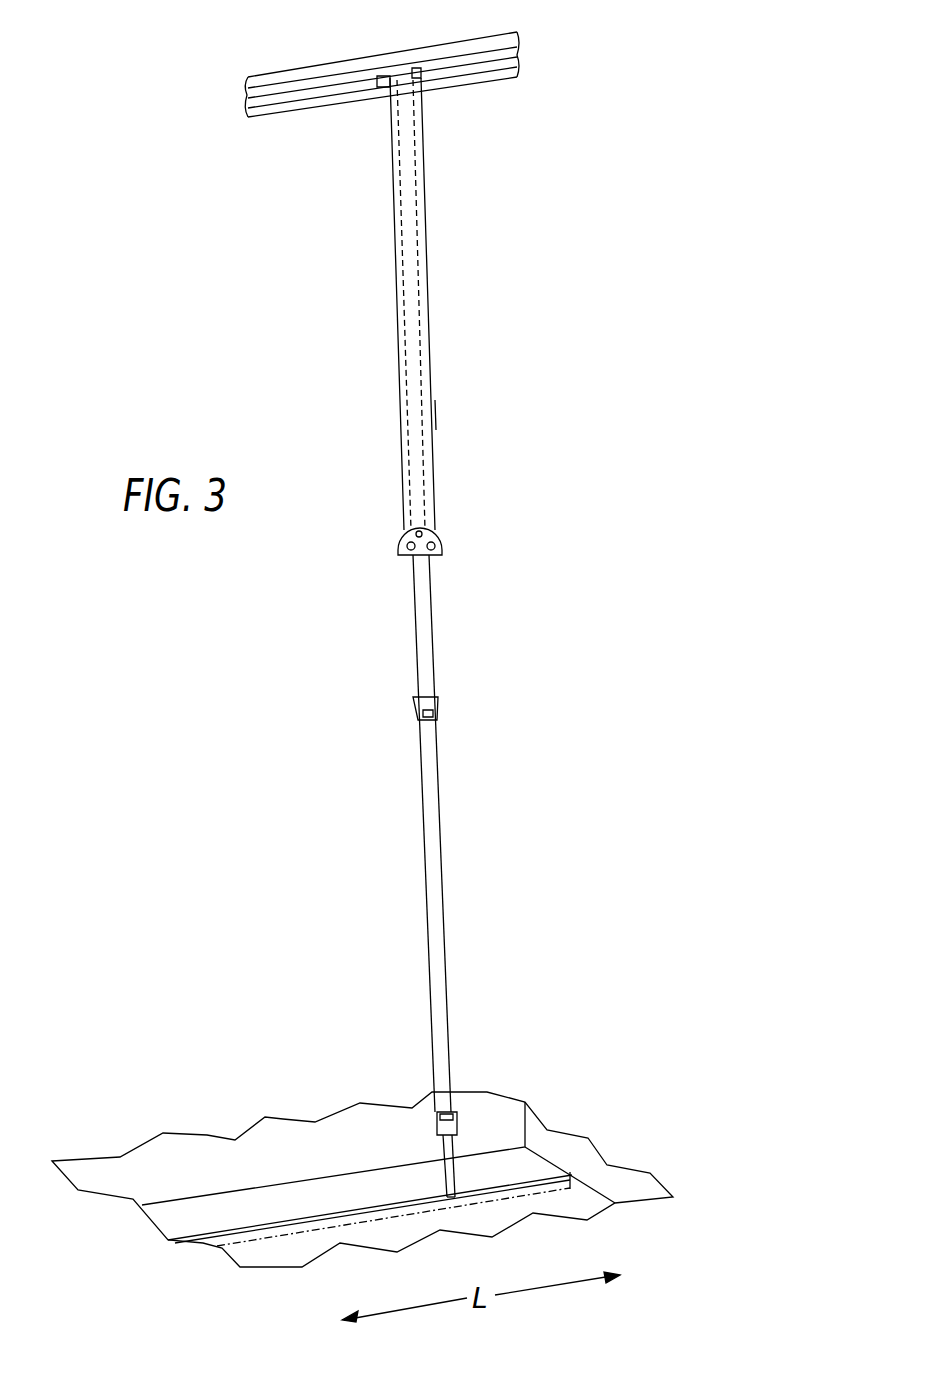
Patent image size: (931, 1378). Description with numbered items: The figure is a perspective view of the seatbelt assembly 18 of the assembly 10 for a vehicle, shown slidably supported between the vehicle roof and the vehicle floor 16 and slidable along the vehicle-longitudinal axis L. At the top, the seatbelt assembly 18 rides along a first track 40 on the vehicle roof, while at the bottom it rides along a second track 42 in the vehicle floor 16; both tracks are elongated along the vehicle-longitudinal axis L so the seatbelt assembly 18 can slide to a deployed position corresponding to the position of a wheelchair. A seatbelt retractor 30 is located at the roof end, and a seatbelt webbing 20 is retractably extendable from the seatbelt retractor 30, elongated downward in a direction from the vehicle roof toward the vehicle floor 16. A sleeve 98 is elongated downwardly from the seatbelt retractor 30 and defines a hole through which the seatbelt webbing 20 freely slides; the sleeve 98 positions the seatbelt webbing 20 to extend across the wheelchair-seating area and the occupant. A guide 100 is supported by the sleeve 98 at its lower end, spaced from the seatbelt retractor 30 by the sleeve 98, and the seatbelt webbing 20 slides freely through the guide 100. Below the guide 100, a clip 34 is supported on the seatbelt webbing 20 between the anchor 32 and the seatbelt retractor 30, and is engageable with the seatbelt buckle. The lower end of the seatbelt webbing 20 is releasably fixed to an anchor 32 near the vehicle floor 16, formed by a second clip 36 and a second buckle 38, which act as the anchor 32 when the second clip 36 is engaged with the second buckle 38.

The assembly 10 is at (687, 187).
The vehicle floor 16 is at (255, 1150).
The seatbelt assembly 18 is at (467, 205).
The seatbelt webbing 20 is at (430, 335).
The seatbelt retractor 30 is at (412, 78).
The anchor 32 is at (458, 1173).
The clip 34 is at (438, 708).
The second clip 36 is at (433, 1120).
The second buckle 38 is at (453, 1148).
The first track 40 is at (317, 77).
The second track 42 is at (443, 1207).
The sleeve 98 is at (432, 417).
The guide 100 is at (442, 545).